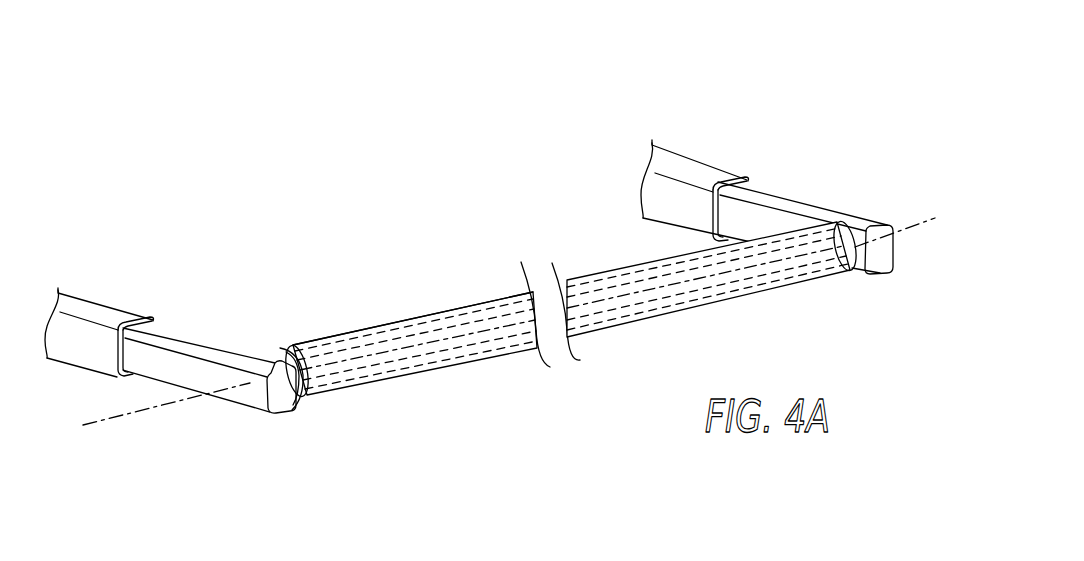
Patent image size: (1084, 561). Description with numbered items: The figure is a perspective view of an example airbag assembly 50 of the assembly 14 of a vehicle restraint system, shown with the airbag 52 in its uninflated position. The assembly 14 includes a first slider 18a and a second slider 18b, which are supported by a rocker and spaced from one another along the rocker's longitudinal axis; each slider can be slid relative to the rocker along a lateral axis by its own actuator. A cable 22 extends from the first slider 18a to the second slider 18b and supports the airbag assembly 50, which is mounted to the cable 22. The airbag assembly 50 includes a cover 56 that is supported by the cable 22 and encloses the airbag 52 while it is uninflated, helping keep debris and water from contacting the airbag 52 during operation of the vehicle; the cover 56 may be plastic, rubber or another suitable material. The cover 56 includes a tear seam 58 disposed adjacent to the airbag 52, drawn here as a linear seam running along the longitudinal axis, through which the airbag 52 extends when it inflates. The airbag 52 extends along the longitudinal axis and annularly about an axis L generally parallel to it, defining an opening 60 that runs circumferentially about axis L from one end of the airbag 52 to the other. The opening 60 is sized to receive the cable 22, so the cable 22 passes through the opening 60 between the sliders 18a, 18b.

The assembly 14 is at (500, 274).
The first slider 18a is at (253, 408).
The second slider 18b is at (825, 189).
The cable 22 is at (372, 332).
The airbag assembly 50 is at (432, 389).
The airbag 52 is at (355, 380).
The cover 56 is at (443, 310).
The tear seam 58 is at (612, 298).
The opening 60 is at (293, 348).